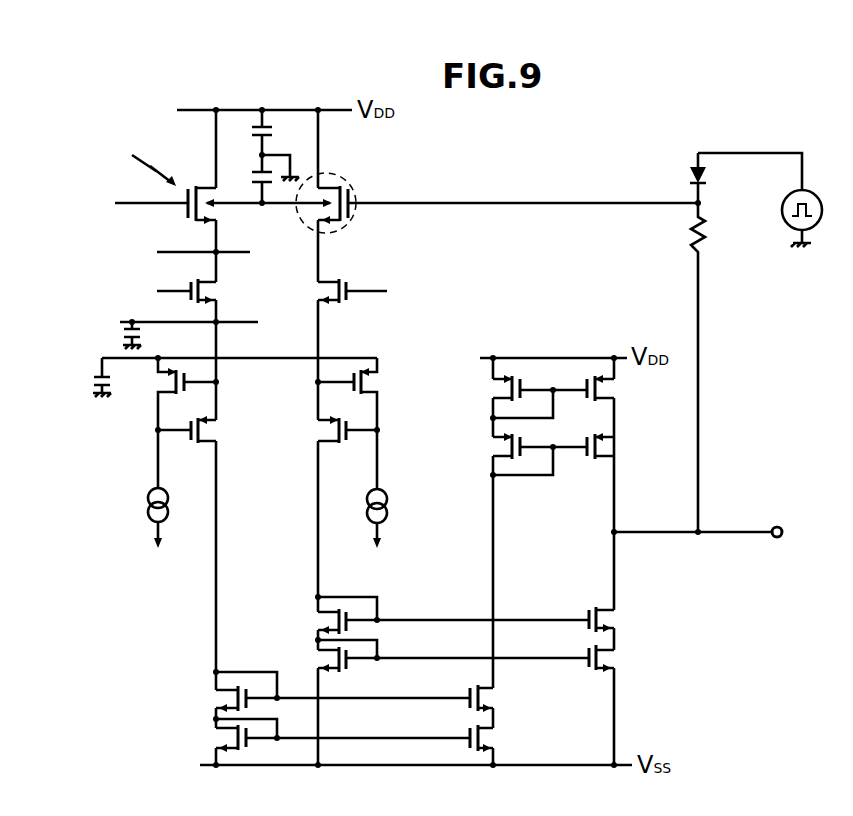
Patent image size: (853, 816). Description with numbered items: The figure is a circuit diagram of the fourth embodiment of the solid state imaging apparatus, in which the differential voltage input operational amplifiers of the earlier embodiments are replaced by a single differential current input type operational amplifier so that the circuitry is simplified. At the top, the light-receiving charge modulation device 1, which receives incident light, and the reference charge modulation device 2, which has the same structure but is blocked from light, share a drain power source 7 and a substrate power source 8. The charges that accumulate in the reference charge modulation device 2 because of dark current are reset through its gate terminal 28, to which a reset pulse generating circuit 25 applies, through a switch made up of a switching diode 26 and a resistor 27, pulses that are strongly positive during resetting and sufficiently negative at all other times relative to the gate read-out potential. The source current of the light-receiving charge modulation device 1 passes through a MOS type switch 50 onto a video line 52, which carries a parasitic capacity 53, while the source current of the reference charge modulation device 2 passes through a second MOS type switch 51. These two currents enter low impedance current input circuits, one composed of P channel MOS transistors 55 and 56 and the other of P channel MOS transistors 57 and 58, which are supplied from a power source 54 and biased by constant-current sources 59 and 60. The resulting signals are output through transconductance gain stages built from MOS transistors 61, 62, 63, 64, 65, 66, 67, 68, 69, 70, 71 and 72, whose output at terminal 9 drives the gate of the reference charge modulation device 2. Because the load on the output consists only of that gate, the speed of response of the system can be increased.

The light-receiving charge modulation device 1 is at (183, 216).
The reference charge modulation device 2 is at (357, 193).
The drain power source 7 is at (276, 128).
The substrate power source 8 is at (248, 177).
The output terminal 9 is at (777, 540).
The reset pulse generating circuit 25 is at (812, 192).
The switching diode 26 is at (690, 173).
The resistor 27 is at (706, 232).
The gate terminal 28 is at (435, 200).
The MOS type switch 50 is at (212, 292).
The MOS type switch 51 is at (344, 305).
The video line 52 is at (219, 313).
The parasitic capacity 53 is at (122, 332).
The power source 54 is at (95, 388).
The P channel MOS transistor 55 is at (162, 383).
The P channel MOS transistor 56 is at (216, 433).
The P channel MOS transistor 57 is at (380, 381).
The P channel MOS transistor 58 is at (318, 427).
The constant-current source 59 is at (168, 491).
The constant-current source 60 is at (388, 497).
The MOS transistor 61 is at (222, 698).
The MOS transistor 62 is at (222, 736).
The MOS transistor 63 is at (326, 622).
The MOS transistor 64 is at (326, 660).
The MOS transistor 65 is at (496, 699).
The MOS transistor 66 is at (496, 739).
The MOS transistor 67 is at (498, 390).
The MOS transistor 68 is at (498, 447).
The MOS transistor 69 is at (618, 390).
The MOS transistor 70 is at (618, 445).
The MOS transistor 71 is at (618, 615).
The MOS transistor 72 is at (618, 661).